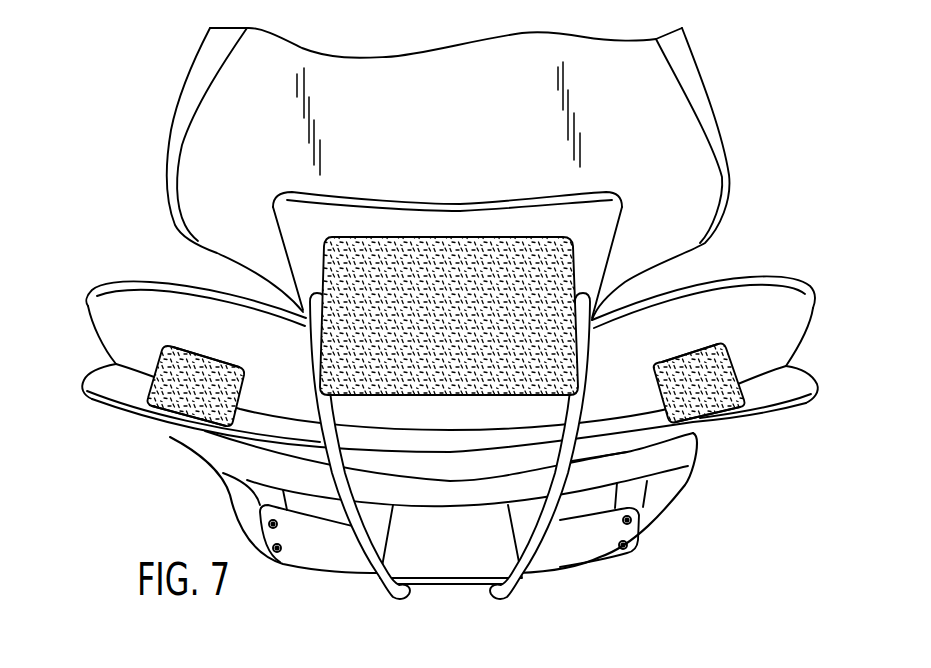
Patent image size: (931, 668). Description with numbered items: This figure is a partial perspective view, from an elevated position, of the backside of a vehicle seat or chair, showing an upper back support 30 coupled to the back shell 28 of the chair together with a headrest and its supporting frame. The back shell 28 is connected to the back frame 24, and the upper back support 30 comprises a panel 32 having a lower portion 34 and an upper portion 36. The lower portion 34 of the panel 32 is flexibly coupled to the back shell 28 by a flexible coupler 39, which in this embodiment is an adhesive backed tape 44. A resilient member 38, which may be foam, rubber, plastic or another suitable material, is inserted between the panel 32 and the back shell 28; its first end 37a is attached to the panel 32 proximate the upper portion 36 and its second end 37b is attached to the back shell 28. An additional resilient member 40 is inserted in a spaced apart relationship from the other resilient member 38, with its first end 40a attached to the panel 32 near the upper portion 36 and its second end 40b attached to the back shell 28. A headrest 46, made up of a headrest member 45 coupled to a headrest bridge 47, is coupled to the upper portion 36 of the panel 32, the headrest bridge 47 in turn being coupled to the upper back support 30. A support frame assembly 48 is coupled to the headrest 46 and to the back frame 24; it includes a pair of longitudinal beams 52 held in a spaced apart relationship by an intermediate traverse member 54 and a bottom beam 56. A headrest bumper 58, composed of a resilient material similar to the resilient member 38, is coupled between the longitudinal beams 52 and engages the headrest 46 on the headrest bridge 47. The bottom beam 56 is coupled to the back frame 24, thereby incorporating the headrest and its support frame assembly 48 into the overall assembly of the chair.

The back frame 24 is at (212, 457).
The back shell 28 is at (693, 436).
The upper back support 30 is at (747, 279).
The panel 32 is at (87, 303).
The lower portion 34 is at (130, 364).
The upper portion 36 is at (138, 298).
The first end 37a is at (213, 350).
The second end 37b is at (150, 404).
The resilient member 38 is at (177, 398).
The flexible coupler 39 is at (805, 353).
The additional resilient member 40 is at (722, 402).
The first end 40a is at (712, 343).
The second end 40b is at (750, 404).
The adhesive backed tape 44 is at (760, 367).
The headrest member 45 is at (677, 175).
The headrest 46 is at (661, 88).
The headrest bridge 47 is at (596, 236).
The support frame assembly 48 is at (535, 560).
The longitudinal beams 52 is at (308, 357).
The intermediate traverse member 54 is at (448, 580).
The bottom beam 56 is at (593, 552).
The headrest bumper 58 is at (443, 370).